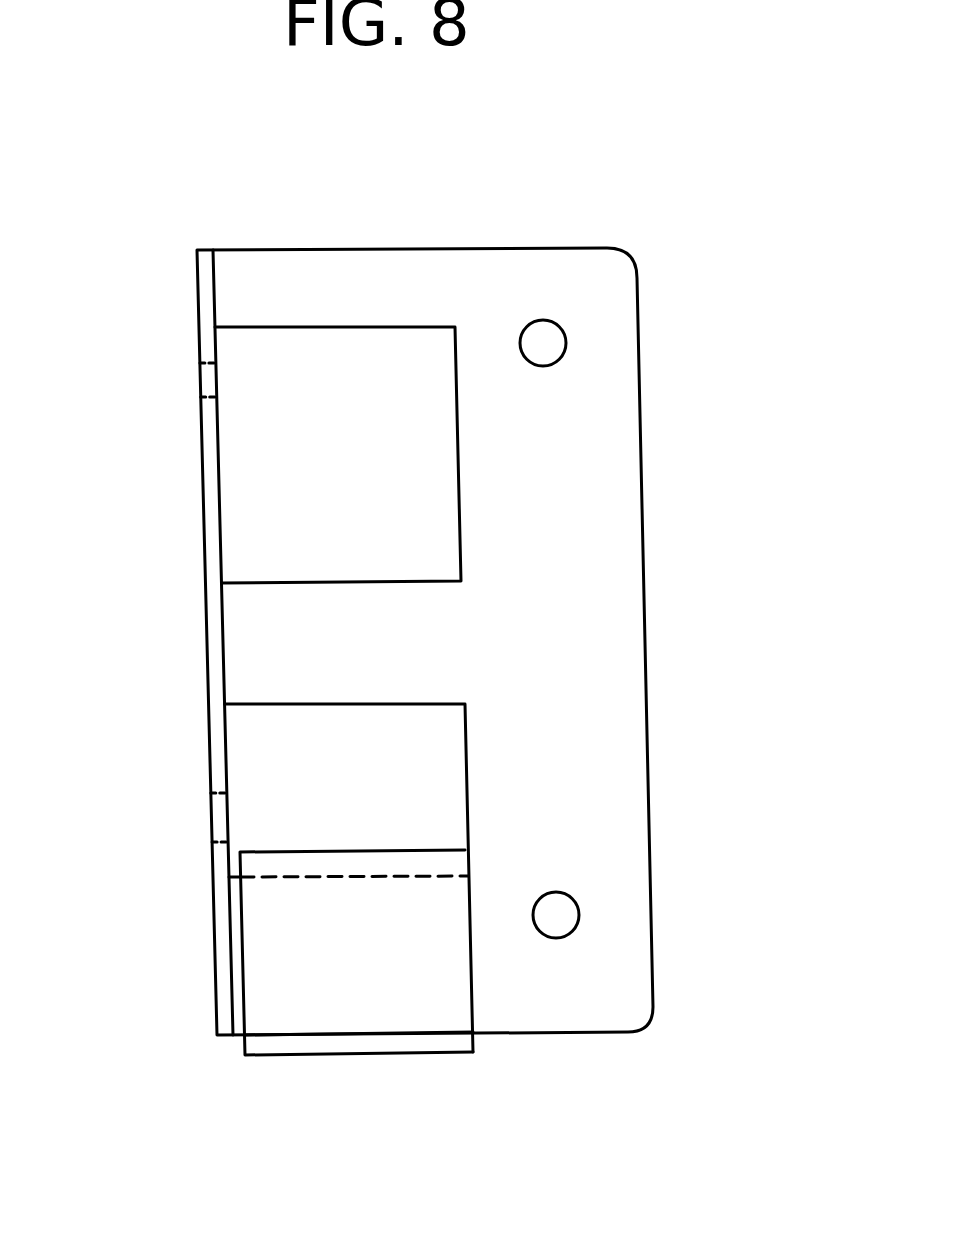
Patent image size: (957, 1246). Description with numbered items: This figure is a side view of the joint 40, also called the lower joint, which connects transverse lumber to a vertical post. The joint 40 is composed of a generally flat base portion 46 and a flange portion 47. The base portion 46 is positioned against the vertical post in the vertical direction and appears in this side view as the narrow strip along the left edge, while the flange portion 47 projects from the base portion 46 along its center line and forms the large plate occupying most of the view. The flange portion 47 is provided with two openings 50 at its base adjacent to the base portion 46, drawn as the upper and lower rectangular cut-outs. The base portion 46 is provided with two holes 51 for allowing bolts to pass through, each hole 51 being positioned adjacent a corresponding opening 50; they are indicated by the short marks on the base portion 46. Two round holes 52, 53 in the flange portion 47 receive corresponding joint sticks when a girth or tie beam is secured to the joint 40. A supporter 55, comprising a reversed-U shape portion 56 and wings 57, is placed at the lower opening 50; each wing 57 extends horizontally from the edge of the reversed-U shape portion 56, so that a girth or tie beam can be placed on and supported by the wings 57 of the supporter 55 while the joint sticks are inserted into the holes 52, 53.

The joint 40 is at (168, 666).
The base portion 46 is at (203, 515).
The flange portion 47 is at (602, 512).
The opening 50 is at (274, 360).
The hole 51 is at (200, 380).
The hole 52 is at (558, 920).
The hole 53 is at (546, 347).
The supporter 55 is at (285, 958).
The reversed-U shape portion 56 is at (333, 865).
The wing 57 is at (300, 1040).